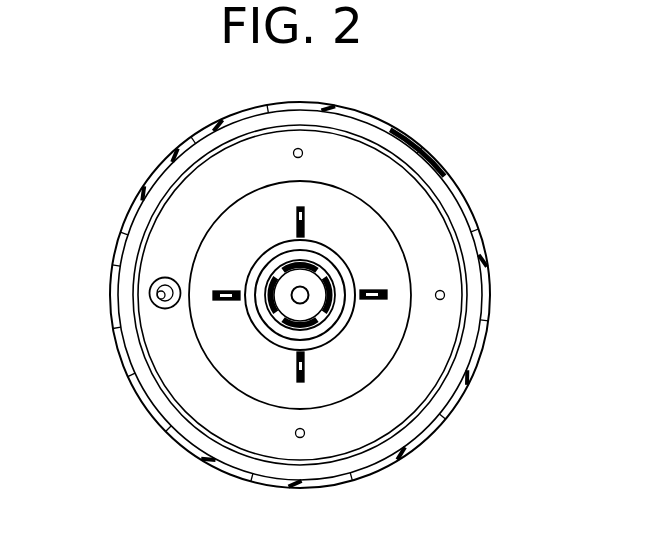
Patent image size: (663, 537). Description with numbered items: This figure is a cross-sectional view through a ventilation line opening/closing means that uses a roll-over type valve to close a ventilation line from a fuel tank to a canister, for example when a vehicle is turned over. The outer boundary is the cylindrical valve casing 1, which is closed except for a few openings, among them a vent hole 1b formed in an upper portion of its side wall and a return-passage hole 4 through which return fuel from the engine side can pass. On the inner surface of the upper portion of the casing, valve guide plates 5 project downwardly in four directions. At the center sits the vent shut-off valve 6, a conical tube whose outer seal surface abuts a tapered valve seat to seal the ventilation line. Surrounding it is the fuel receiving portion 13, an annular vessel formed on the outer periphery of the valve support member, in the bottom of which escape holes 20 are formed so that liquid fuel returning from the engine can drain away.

The cylindrical valve casing 1 is at (393, 131).
The vent hole 1b is at (110, 297).
The return-passage hole 4 is at (168, 284).
The valve guide plates 5 is at (387, 291).
The vent shut-off valve 6 is at (325, 316).
The fuel receiving portion 13 is at (382, 419).
The escape holes 20 is at (293, 153).